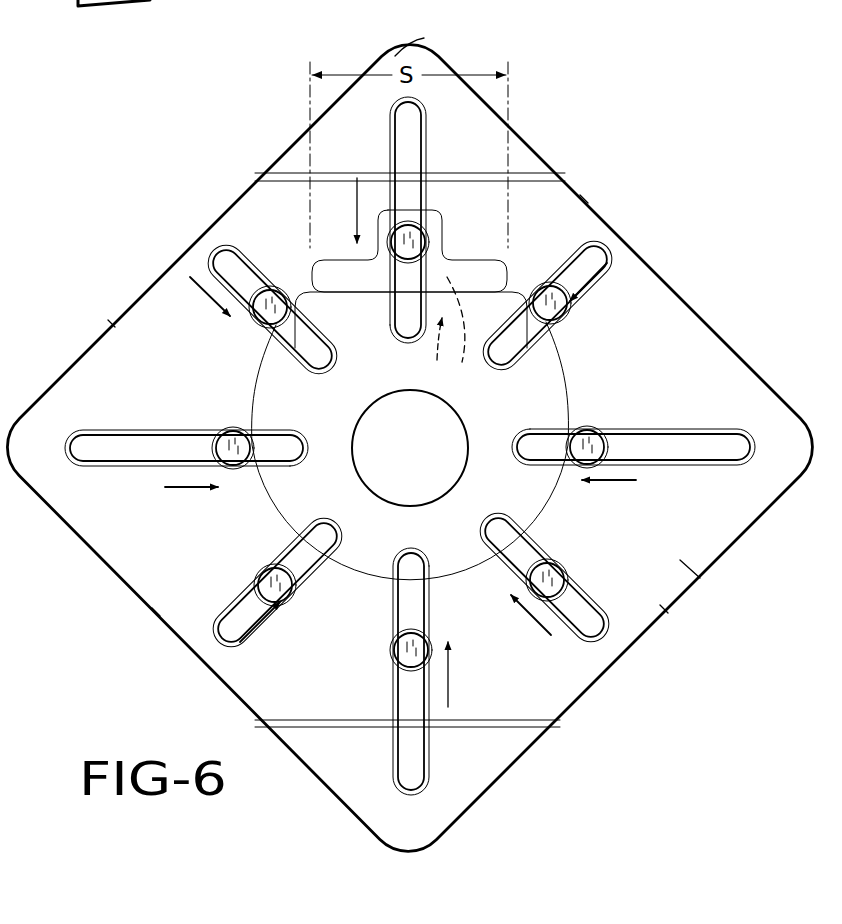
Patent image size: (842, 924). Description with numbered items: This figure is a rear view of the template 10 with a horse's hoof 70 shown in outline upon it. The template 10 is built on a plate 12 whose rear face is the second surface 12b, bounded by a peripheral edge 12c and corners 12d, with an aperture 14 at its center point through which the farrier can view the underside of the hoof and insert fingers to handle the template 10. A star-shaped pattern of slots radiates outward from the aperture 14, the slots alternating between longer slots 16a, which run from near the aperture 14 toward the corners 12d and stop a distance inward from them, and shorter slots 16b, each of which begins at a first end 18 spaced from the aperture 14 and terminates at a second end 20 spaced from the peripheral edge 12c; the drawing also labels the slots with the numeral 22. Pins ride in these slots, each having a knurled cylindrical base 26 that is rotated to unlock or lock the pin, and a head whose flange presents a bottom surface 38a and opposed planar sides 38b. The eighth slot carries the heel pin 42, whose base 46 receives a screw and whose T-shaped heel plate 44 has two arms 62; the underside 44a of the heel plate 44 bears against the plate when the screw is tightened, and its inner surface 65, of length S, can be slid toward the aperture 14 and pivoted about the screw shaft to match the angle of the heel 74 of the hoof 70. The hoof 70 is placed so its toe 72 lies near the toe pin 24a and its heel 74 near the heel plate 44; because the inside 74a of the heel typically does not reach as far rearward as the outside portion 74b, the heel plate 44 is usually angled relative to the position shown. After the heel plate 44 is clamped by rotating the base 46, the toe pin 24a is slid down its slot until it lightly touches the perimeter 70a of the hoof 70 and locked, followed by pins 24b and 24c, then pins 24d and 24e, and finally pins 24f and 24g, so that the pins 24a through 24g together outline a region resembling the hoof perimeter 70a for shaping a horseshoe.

The template 10 is at (602, 140).
The plate 12 is at (675, 293).
The second surface 12b is at (690, 565).
The peripheral edge 12c is at (584, 200).
The corners 12d is at (424, 38).
The aperture 14 is at (460, 480).
The slots 16a is at (106, 476).
The slots 16b is at (212, 284).
The first end 18 is at (205, 660).
The second end 20 is at (330, 502).
The slot 22 is at (393, 152).
The toe pin 24a is at (402, 657).
The pin 24b is at (268, 580).
The pin 24c is at (565, 572).
The pin 24d is at (233, 432).
The pin 24e is at (592, 430).
The pin 24f is at (270, 283).
The pin 24g is at (552, 283).
The base 26 is at (262, 325).
The bottom surface 38a is at (568, 484).
The opposed planar sides 38b is at (575, 330).
The pin 42 is at (428, 243).
The heel plate 44 is at (337, 253).
The underside 44a is at (456, 334).
The base 46 is at (412, 226).
The arms 62 is at (318, 278).
The inner surface 65 is at (377, 293).
The hoof 70 is at (252, 513).
The perimeter 70a is at (330, 618).
The toe 72 is at (462, 622).
The heel 74 is at (418, 378).
The inside of the heel 74a is at (287, 350).
The ring portion 74b is at (530, 350).